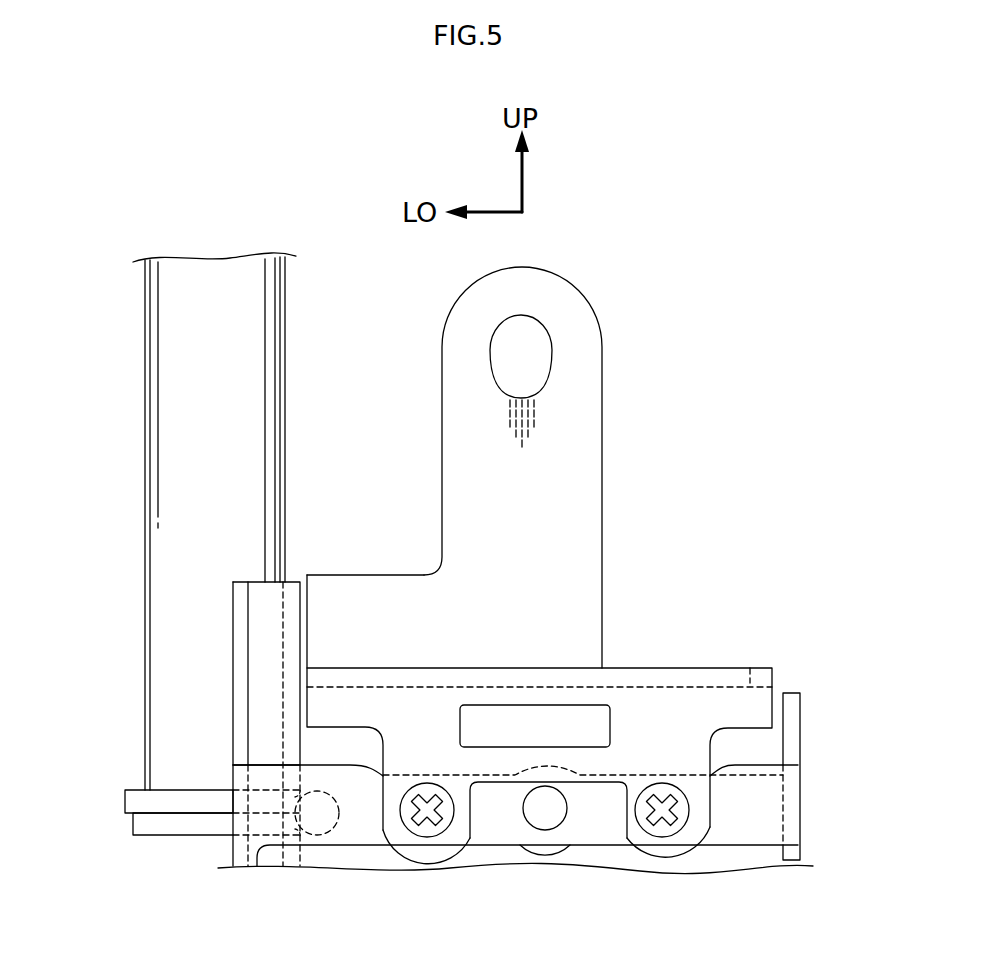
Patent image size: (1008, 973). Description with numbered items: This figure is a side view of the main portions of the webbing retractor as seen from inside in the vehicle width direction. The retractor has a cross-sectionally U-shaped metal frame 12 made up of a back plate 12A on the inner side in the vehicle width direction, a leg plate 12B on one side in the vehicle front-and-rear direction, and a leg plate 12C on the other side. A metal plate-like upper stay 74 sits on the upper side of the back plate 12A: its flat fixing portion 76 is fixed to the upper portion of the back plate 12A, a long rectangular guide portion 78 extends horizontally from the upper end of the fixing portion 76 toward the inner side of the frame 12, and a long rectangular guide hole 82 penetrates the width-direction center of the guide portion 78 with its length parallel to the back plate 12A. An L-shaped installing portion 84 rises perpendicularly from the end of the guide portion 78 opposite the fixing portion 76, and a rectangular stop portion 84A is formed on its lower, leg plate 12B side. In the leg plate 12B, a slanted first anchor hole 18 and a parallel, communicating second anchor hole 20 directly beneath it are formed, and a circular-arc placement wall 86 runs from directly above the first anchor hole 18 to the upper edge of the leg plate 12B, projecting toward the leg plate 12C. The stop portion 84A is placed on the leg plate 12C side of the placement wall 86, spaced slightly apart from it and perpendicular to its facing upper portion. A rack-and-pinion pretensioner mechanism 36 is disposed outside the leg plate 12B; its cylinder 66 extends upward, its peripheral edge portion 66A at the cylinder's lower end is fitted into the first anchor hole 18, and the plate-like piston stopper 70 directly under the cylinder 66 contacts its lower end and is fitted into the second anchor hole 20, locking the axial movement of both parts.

The frame 12 is at (802, 695).
The back plate 12A is at (723, 848).
The leg plate 12B is at (232, 683).
The leg plate 12C is at (802, 748).
The first anchor hole 18 is at (375, 801).
The second anchor hole 20 is at (375, 838).
The pretensioner mechanism 36 is at (141, 347).
The cylinder 66 is at (285, 420).
The peripheral edge portion 66A is at (124, 800).
The piston stopper 70 is at (132, 825).
The upper stay 74 is at (604, 345).
The fixing portion 76 is at (475, 832).
The guide portion 78 is at (640, 668).
The guide hole 82 is at (750, 683).
The installing portion 84 is at (603, 478).
The stop portion 84A is at (372, 575).
The placement wall 86 is at (322, 597).